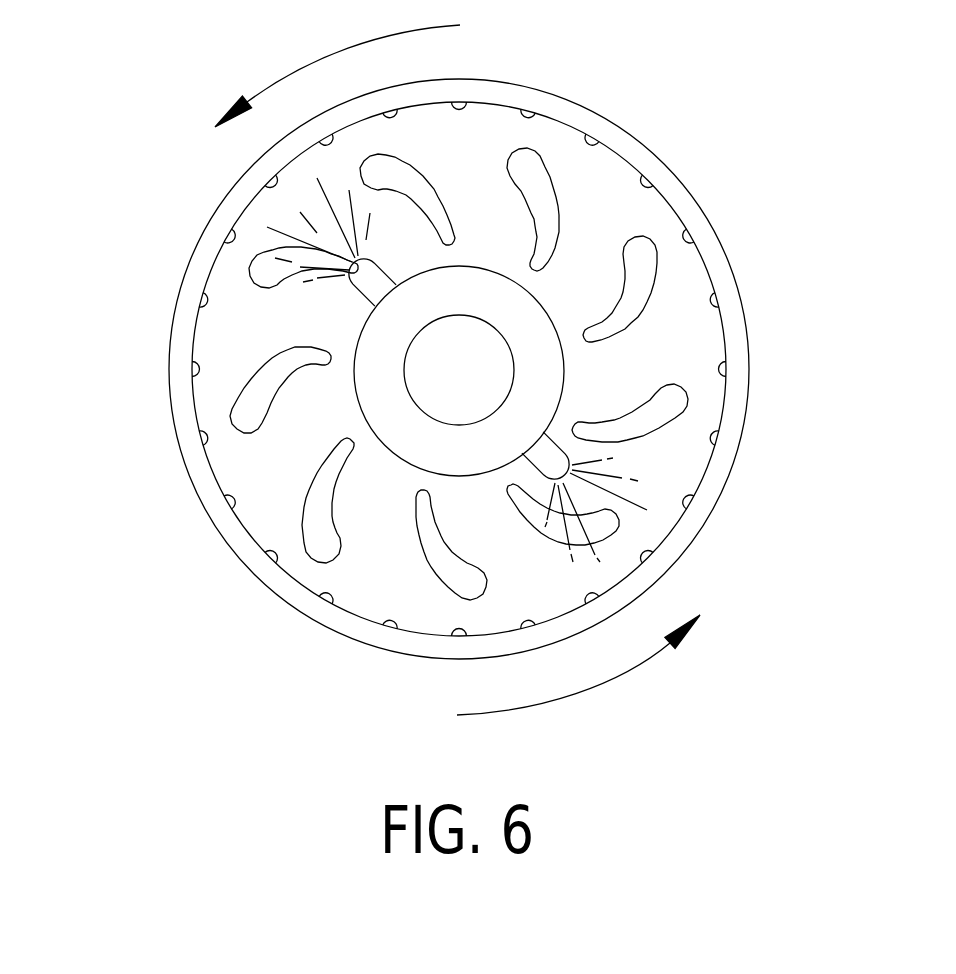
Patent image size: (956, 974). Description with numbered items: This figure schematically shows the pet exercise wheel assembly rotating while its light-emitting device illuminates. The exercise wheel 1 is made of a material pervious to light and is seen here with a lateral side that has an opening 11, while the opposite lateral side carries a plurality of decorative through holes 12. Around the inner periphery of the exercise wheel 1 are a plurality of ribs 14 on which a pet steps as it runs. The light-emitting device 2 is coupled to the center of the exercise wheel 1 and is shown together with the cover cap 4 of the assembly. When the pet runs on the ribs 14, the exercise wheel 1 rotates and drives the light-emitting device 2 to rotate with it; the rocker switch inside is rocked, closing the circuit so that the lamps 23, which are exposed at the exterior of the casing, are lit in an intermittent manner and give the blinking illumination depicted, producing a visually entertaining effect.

The exercise wheel 1 is at (730, 477).
The light-emitting device 2 is at (520, 310).
The cover cap 4 is at (493, 369).
The opening 11 is at (688, 283).
The decorative through holes 12 is at (323, 542).
The ribs 14 is at (232, 500).
The lamps 23 is at (372, 287).